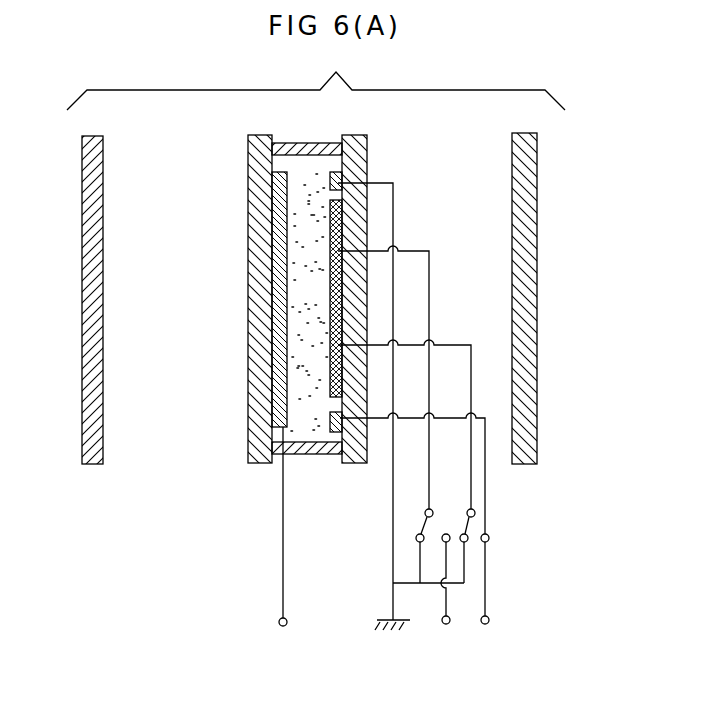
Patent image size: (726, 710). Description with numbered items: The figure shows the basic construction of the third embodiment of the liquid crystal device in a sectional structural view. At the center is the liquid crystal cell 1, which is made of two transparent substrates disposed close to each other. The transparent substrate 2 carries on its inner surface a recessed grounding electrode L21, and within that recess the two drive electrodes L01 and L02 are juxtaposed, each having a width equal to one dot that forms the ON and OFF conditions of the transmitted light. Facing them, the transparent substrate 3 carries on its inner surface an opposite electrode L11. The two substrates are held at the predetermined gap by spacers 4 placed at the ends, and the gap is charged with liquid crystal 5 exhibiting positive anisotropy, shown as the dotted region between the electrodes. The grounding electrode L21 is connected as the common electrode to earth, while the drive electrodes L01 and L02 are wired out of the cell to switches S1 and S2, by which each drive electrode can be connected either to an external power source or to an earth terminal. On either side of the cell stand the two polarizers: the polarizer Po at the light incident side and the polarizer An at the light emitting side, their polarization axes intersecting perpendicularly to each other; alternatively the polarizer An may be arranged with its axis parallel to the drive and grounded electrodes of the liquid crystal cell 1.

The liquid crystal cell 1 is at (248, 361).
The transparent substrate 2 is at (370, 140).
The transparent substrate 3 is at (256, 221).
The spacers 4 is at (316, 143).
The liquid crystal 5 is at (293, 290).
The opposite electrode L11 is at (291, 169).
The drive electrode L01 is at (333, 386).
The grounding electrode L21 is at (345, 180).
The drive electrode L02 is at (347, 228).
The polarizer Po is at (86, 298).
The polarizer An is at (522, 322).
The switch S1 is at (487, 553).
The switch S2 is at (423, 553).